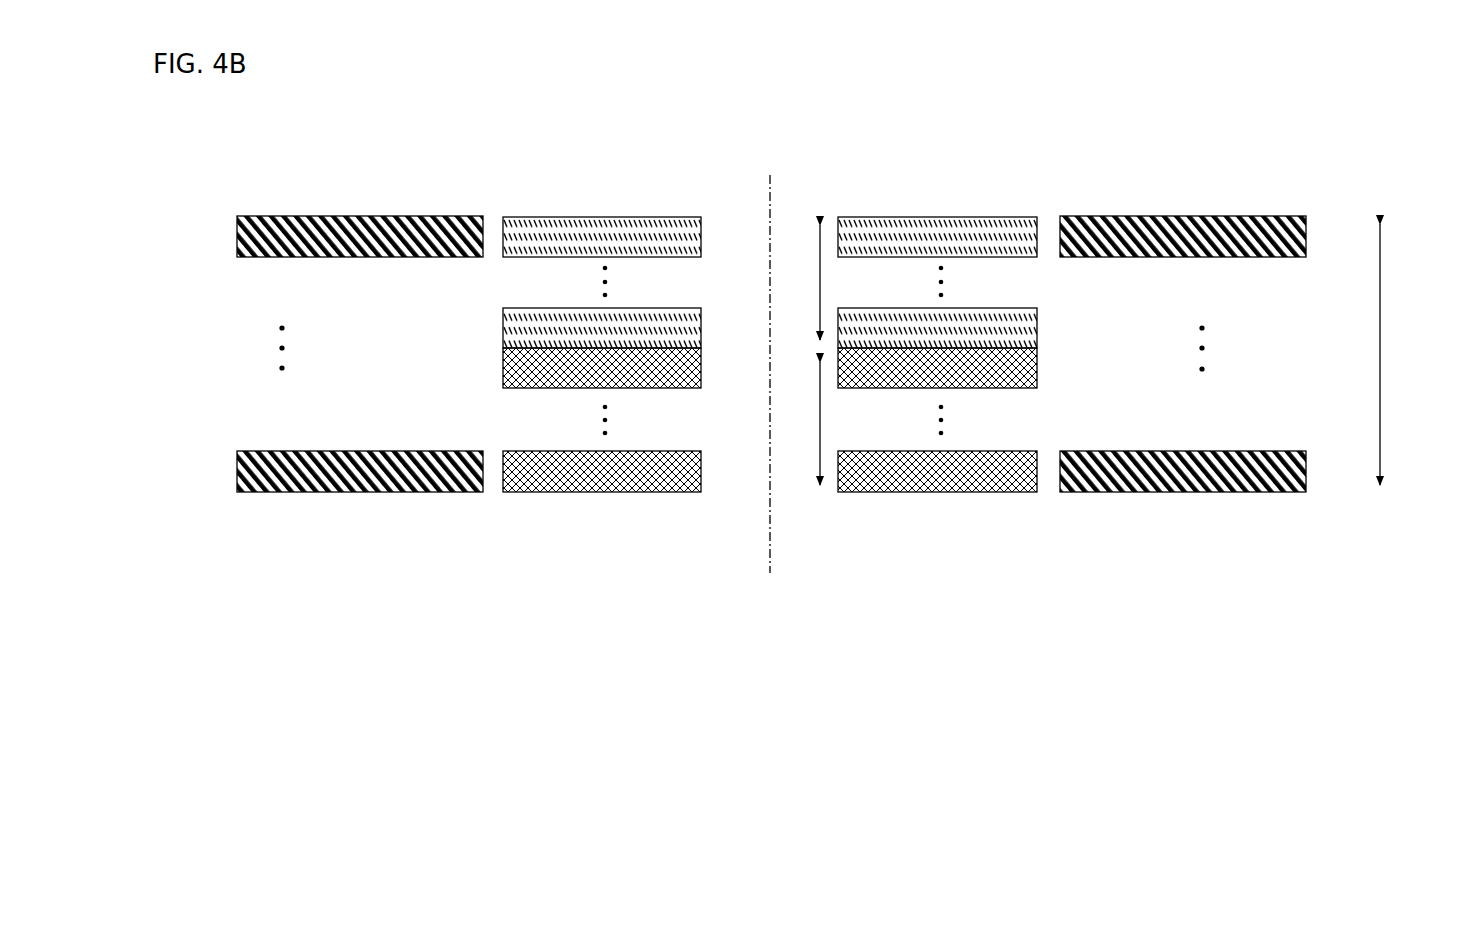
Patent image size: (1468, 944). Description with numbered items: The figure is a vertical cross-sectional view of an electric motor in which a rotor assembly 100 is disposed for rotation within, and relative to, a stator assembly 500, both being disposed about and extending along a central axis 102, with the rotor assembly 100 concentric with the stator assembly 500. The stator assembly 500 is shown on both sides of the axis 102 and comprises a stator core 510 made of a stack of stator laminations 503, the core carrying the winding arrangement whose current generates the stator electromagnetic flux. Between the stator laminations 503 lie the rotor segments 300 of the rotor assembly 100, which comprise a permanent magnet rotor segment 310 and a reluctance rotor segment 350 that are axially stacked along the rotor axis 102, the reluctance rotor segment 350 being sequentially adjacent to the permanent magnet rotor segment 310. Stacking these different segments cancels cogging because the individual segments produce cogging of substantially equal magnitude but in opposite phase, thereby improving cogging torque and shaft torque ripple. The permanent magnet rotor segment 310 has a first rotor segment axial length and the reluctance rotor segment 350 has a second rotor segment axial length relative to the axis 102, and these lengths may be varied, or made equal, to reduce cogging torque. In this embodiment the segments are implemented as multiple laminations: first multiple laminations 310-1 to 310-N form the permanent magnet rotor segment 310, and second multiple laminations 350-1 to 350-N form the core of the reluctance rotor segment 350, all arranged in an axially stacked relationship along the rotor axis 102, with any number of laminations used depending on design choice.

The rotor assembly 100 is at (774, 412).
The central axis 102 is at (770, 183).
The rotor segments 300 is at (680, 354).
The permanent magnet rotor segment 310 is at (704, 282).
The first lamination 310-1 is at (503, 238).
The Nth first lamination 310-N is at (503, 321).
The reluctance rotor segment 350 is at (704, 420).
The second lamination 350-1 is at (503, 363).
The last second lamination 350-N is at (503, 455).
The stator assembly 500 is at (698, 396).
The stator laminations 503 is at (237, 229).
The stator core 510 is at (286, 358).